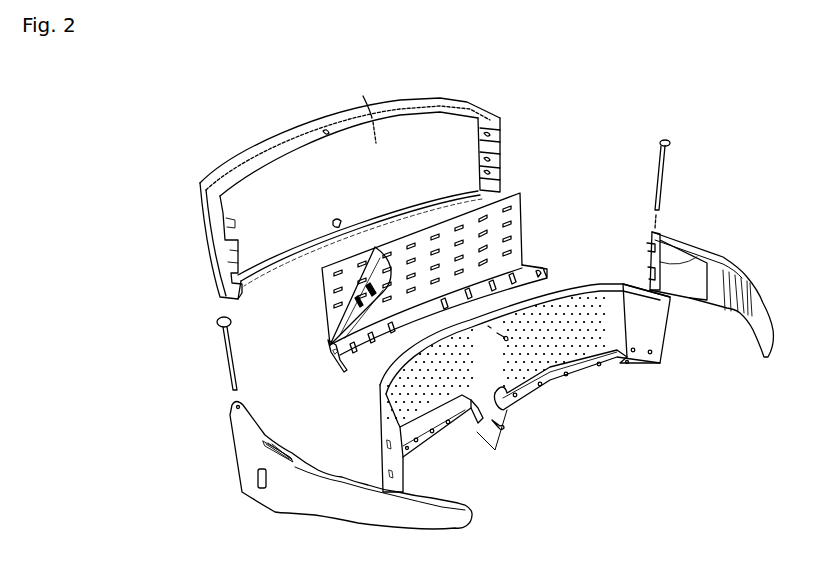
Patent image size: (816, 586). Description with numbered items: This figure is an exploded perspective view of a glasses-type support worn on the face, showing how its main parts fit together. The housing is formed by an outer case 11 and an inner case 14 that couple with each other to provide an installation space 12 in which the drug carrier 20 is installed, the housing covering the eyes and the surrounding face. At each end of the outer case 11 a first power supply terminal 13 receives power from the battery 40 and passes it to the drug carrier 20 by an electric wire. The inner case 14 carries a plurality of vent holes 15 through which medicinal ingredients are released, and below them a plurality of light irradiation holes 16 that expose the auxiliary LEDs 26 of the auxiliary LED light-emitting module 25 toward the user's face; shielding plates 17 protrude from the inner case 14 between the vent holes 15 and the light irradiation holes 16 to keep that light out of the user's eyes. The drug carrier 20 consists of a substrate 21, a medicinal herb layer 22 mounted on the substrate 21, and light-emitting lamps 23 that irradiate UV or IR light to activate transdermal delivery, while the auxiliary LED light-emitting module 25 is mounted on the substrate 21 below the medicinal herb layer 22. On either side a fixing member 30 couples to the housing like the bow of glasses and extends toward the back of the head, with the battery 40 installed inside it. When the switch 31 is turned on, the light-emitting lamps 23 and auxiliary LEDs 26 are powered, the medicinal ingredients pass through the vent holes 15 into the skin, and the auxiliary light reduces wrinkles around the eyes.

The outer case 11 is at (242, 155).
The installation space 12 is at (362, 108).
The first power supply terminal 13 is at (503, 153).
The inner case 14 is at (525, 371).
The vent holes 15 is at (457, 358).
The light irradiation holes 16 is at (458, 432).
The shielding plates 17 is at (492, 439).
The drug carrier 20 is at (406, 309).
The substrate 21 is at (333, 258).
The medicinal herb layer 22 is at (332, 355).
The light-emitting lamps 23 is at (327, 281).
The auxiliary LED light-emitting module 25 is at (418, 349).
The auxiliary LEDs 26 is at (367, 358).
The fixing member 30 is at (495, 351).
The switch 31 is at (256, 487).
The battery 40 is at (680, 240).